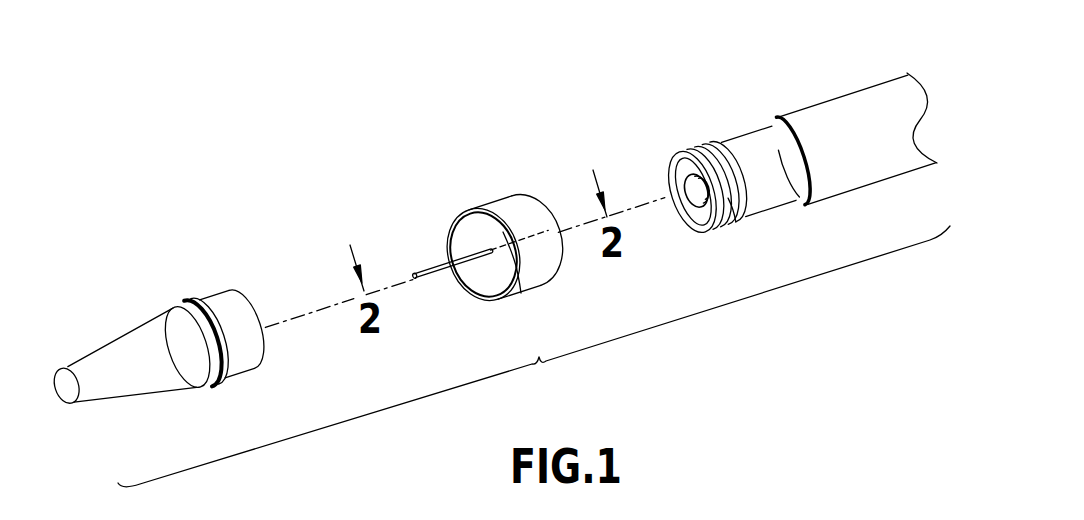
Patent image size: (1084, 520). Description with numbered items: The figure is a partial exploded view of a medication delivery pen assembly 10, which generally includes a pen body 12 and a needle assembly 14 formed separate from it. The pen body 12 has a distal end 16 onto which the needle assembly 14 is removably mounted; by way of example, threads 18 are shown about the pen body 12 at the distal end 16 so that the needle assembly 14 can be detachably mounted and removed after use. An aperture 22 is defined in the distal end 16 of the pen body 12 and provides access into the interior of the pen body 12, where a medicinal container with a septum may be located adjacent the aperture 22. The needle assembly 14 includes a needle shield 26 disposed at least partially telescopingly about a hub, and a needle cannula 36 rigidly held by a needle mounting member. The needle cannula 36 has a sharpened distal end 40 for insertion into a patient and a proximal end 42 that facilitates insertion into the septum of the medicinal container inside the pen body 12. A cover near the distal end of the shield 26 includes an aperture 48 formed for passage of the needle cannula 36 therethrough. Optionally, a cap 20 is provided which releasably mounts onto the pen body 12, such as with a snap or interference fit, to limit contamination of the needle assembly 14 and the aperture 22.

The medication delivery pen assembly 10 is at (534, 356).
The pen body 12 is at (782, 141).
The needle assembly 14 is at (498, 237).
The distal end 16 is at (701, 149).
The threads 18 is at (729, 216).
The cap 20 is at (176, 309).
The aperture 22 is at (698, 193).
The needle shield 26 is at (537, 291).
The needle cannula 36 is at (414, 282).
The sharpened distal end 40 is at (415, 275).
The proximal end 42 is at (554, 228).
The aperture 48 is at (522, 295).